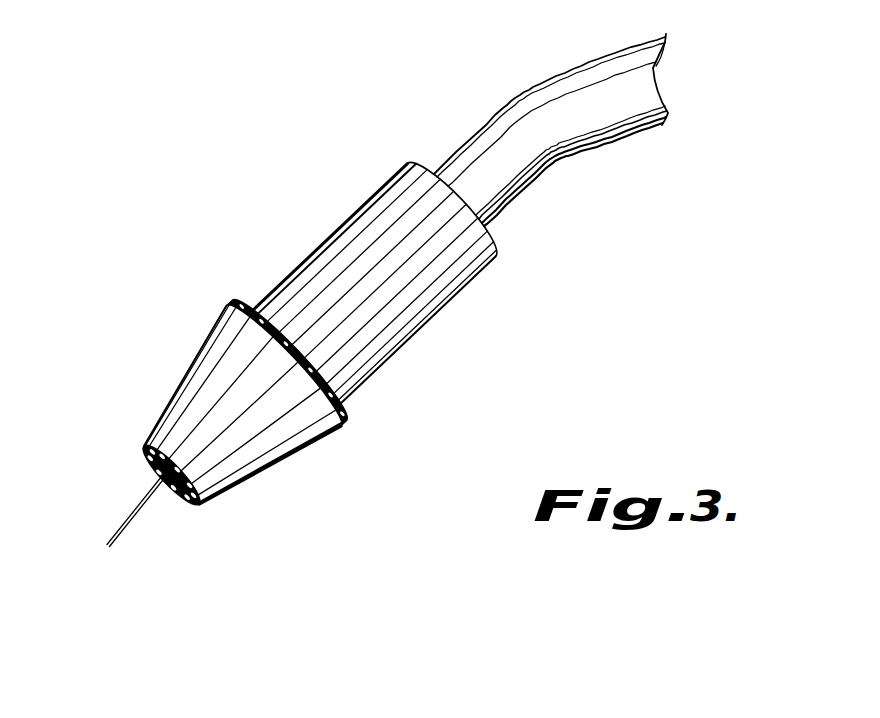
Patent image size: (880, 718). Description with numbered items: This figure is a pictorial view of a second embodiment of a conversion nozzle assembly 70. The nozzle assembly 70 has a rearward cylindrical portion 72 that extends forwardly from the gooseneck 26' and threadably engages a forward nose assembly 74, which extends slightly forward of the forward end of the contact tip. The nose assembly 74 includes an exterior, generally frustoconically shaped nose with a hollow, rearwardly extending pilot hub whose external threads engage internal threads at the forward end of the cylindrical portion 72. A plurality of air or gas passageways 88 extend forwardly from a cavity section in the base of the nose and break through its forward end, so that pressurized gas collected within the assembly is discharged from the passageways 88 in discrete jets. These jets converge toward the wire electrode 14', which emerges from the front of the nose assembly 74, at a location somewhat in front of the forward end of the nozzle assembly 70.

The wire electrode 14' is at (133, 539).
The gooseneck 26' is at (551, 129).
The nozzle assembly 70 is at (320, 172).
The rearward cylindrical portion 72 is at (300, 250).
The forward nose assembly 74 is at (167, 380).
The air or gas passageways 88 is at (148, 457).